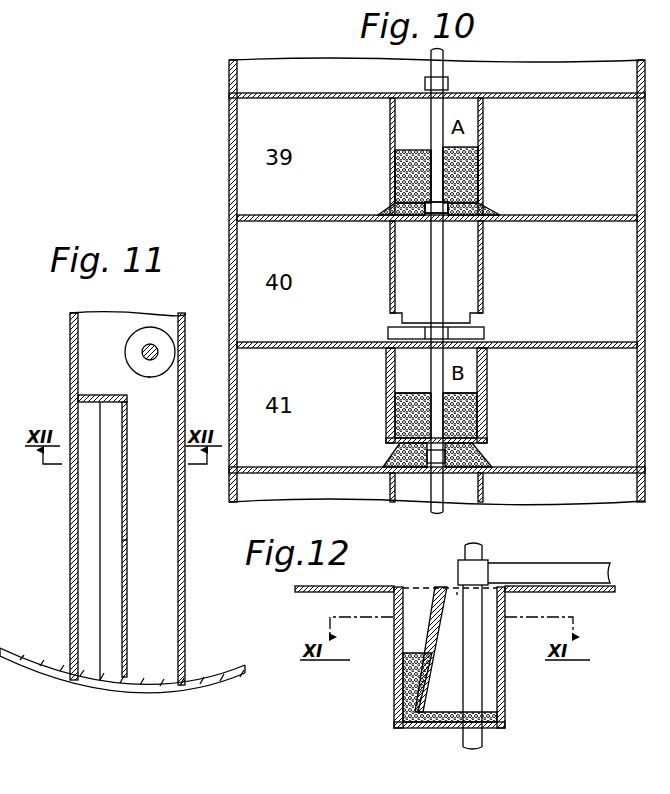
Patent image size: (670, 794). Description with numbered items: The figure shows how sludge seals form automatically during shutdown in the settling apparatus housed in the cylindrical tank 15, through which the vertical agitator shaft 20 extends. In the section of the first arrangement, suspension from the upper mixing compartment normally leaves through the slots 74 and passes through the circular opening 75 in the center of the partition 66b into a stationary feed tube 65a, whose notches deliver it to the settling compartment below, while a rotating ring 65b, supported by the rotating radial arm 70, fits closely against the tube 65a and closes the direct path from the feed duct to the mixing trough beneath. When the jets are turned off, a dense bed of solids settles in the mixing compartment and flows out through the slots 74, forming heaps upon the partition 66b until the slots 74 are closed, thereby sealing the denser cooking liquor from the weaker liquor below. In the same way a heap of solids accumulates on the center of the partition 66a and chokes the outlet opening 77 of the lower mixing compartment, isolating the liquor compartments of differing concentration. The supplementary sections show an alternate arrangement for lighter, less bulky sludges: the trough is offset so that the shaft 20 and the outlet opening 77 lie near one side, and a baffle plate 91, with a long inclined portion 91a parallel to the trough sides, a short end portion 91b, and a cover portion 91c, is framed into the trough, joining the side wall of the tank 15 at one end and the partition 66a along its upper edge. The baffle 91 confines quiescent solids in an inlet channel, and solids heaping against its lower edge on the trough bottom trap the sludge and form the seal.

In FIG. 10, the cylindrical tank 15 is at (230, 142).
In FIG. 11, the cylindrical tank 15 is at (50, 680).
In FIG. 10, the vertical shaft 20 is at (445, 68).
In FIG. 11, the vertical shaft 20 is at (142, 349).
In FIG. 12, the vertical shaft 20 is at (483, 549).
In FIG. 10, the stationary tube 65a is at (483, 264).
In FIG. 10, the rotating ring 65b is at (485, 334).
In FIG. 10, the partition 66a is at (537, 467).
In FIG. 11, the partition 66a is at (112, 318).
In FIG. 12, the partition 66a is at (312, 592).
In FIG. 10, the partition 66b is at (540, 215).
In FIG. 12, the rotating radial arm 70 is at (540, 566).
In FIG. 10, the slot 74 is at (395, 180).
In FIG. 10, the circular opening 75 is at (432, 214).
In FIG. 10, the outlet opening 77 is at (480, 411).
In FIG. 11, the outlet opening 77 is at (157, 380).
In FIG. 11, the baffle plate 91 is at (108, 503).
In FIG. 12, the baffle plate 91 is at (440, 629).
In FIG. 11, the inclined portion 91a is at (127, 549).
In FIG. 11, the end portion 91b is at (91, 396).
In FIG. 12, the end portion 91b is at (425, 598).
In FIG. 12, the cover portion 91c is at (457, 592).